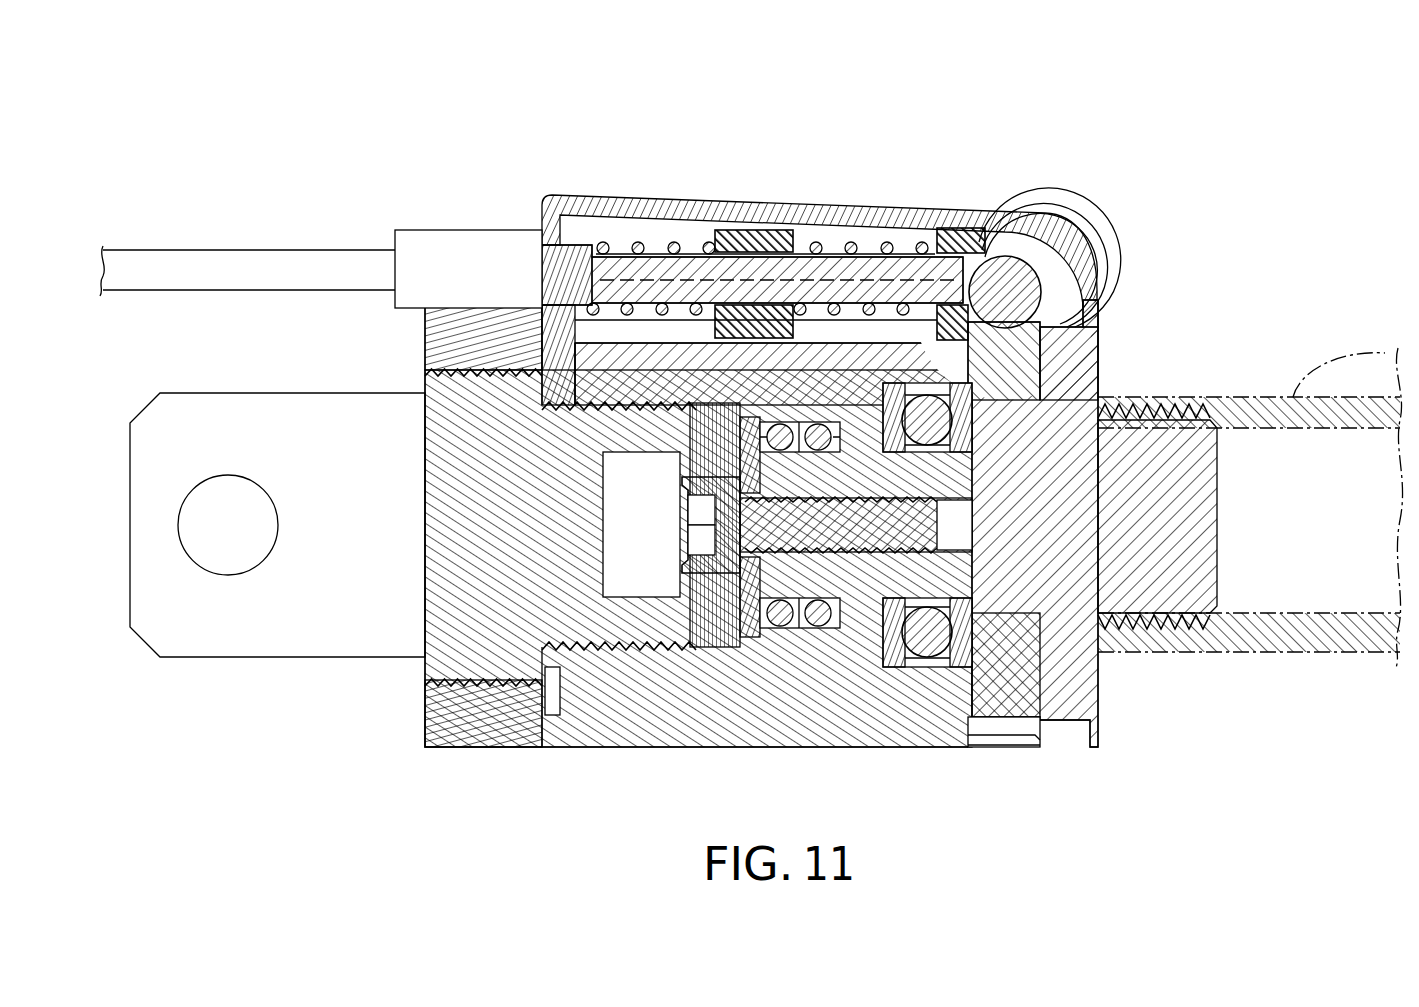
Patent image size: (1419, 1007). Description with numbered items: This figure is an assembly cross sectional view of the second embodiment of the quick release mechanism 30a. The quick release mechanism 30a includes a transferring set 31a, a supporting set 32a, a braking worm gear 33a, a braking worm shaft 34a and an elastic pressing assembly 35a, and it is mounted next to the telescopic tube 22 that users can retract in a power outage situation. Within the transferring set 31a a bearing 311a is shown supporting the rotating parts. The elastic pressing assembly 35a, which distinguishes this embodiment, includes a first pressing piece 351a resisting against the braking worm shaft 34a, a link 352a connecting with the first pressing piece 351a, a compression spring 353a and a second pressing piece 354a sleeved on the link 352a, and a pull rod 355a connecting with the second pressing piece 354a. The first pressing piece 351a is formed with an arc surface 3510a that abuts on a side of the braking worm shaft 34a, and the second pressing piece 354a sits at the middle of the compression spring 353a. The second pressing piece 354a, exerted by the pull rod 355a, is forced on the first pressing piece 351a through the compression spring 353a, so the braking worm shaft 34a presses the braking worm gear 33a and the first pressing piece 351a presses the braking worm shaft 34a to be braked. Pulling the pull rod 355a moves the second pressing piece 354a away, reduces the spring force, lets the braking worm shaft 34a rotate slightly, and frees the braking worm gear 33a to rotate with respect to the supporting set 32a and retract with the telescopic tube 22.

The quick release mechanism 30a is at (801, 40).
The telescopic tube 22 is at (1256, 506).
The transferring set 31a is at (1158, 587).
The bearing 311a is at (887, 580).
The supporting set 32a is at (792, 717).
The braking worm gear 33a is at (1018, 370).
The braking worm shaft 34a is at (985, 270).
The elastic pressing assembly 35a is at (693, 243).
The first pressing piece 351a is at (968, 243).
The link 352a is at (891, 275).
The compression spring 353a is at (850, 247).
The second pressing piece 354a is at (747, 240).
The pull rod 355a is at (265, 267).
The arc surface 3510a is at (1010, 258).